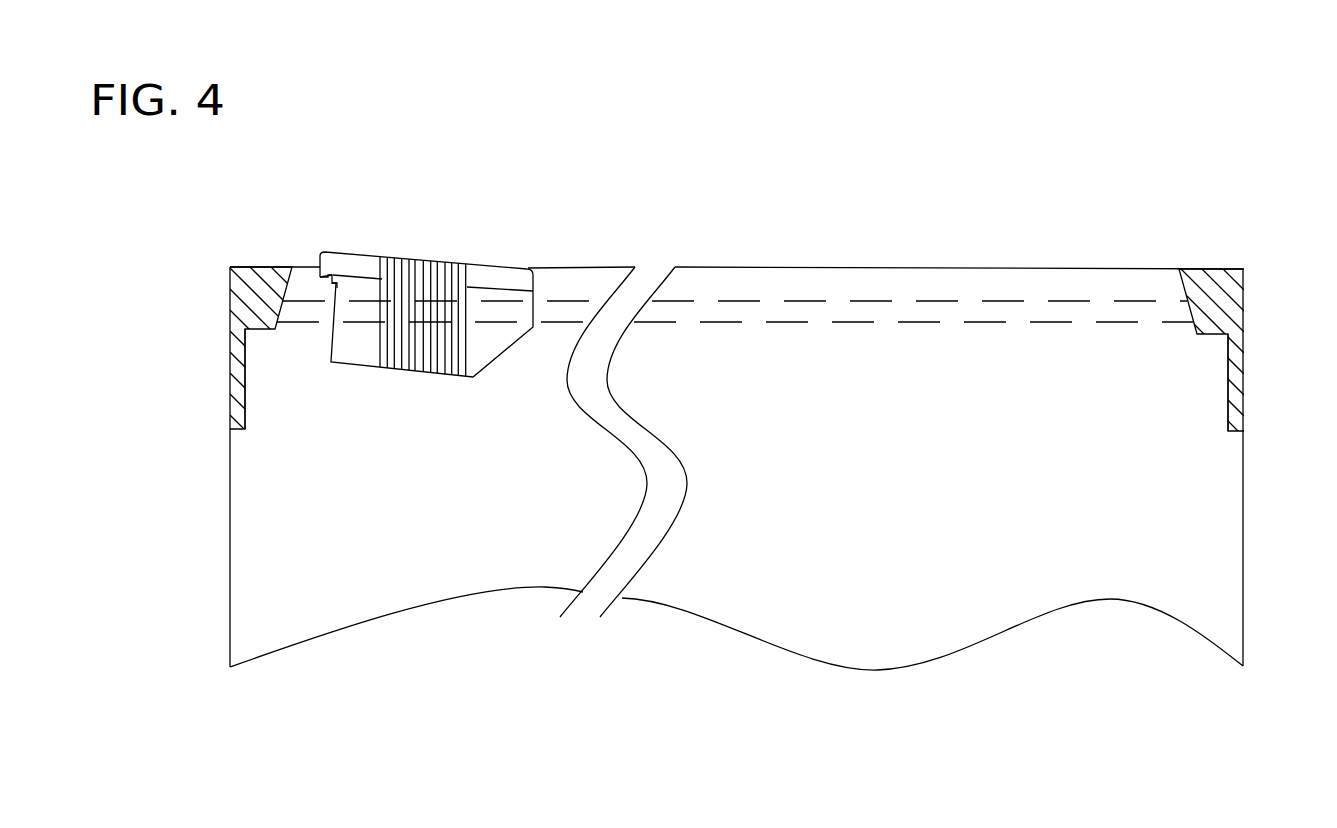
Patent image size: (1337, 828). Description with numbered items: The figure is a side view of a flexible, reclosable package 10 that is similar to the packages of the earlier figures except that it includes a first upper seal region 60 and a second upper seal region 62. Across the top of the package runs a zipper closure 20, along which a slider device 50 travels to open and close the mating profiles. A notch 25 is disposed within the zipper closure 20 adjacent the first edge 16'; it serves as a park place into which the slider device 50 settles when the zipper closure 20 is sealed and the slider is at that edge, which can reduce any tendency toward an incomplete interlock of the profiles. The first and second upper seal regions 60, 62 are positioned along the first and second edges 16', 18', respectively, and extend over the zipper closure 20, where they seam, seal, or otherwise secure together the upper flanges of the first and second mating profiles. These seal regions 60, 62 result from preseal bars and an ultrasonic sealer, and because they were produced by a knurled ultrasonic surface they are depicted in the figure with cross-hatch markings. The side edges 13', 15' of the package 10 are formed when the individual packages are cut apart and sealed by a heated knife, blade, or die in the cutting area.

The package 10 is at (904, 231).
The zipper closure 20 is at (784, 292).
The first edge 16' is at (242, 327).
The second edge 18' is at (1229, 341).
The first upper seal region 60 is at (228, 378).
The second upper seal region 62 is at (1244, 312).
The side edge 13' is at (184, 467).
The side edge 15' is at (1287, 467).
The slider device 50 is at (422, 258).
The notch 25 is at (328, 272).